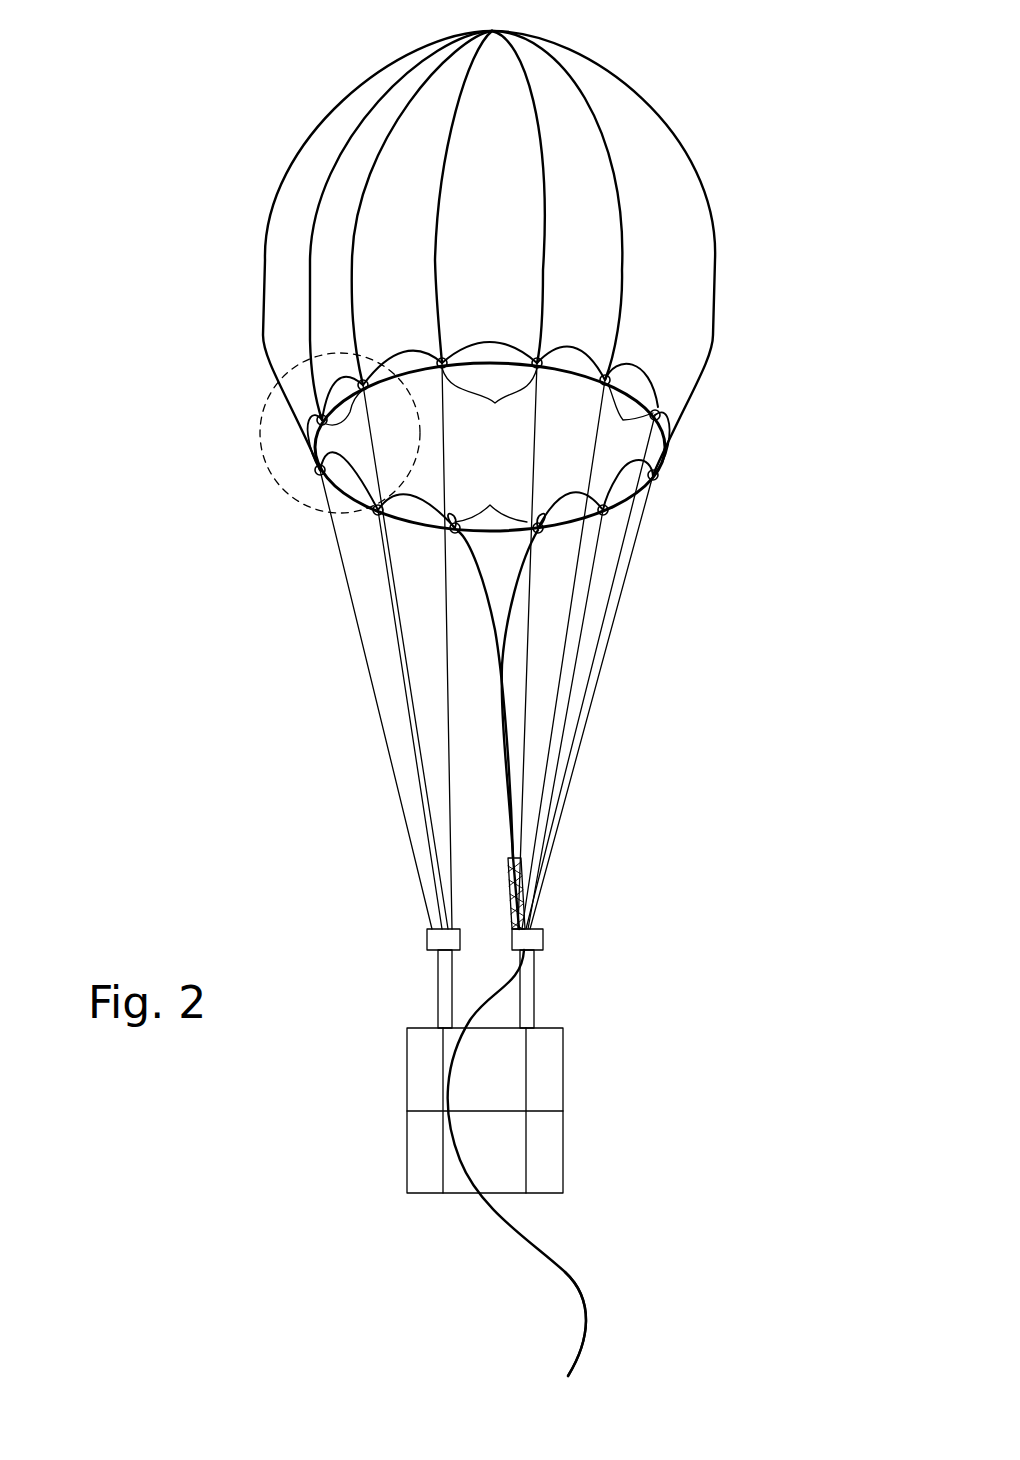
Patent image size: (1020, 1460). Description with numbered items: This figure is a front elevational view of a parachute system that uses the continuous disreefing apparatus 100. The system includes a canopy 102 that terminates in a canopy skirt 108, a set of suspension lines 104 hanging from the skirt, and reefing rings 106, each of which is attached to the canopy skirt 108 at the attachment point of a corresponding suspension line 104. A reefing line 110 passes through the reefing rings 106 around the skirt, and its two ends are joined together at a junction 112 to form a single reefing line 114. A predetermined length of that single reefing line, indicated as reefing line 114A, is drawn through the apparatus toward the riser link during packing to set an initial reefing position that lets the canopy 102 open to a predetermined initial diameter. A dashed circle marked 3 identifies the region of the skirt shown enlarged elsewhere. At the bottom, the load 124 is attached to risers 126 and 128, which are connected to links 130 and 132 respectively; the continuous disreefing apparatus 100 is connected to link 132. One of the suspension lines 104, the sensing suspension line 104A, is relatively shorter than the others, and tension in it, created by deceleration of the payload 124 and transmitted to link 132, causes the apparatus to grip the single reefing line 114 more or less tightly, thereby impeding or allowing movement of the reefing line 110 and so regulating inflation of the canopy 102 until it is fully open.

The detail region shown in FIG. 3 is at (260, 440).
The continuous disreefing apparatus 100 is at (508, 915).
The canopy 102 is at (657, 107).
The suspension lines 104 is at (447, 683).
The sensing suspension line 104A is at (527, 637).
The reefing rings 106 is at (487, 445).
The canopy skirt 108 is at (495, 340).
The reefing line 110 is at (403, 345).
The junction 112 is at (493, 693).
The single reefing line 114 is at (507, 787).
The predetermined length of single reefing line 114A is at (563, 1265).
The load 124 is at (565, 1070).
The riser 126 is at (437, 995).
The riser 128 is at (536, 995).
The link 130 is at (427, 937).
The link 132 is at (545, 942).